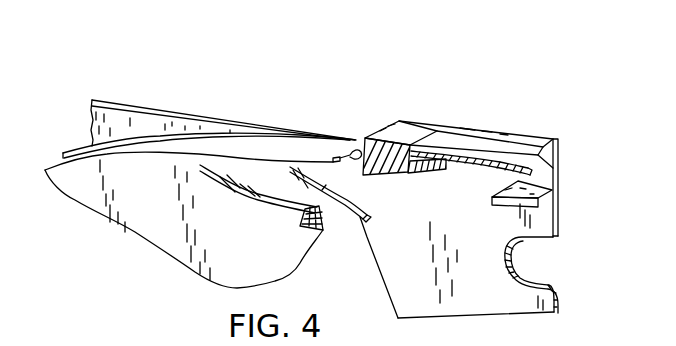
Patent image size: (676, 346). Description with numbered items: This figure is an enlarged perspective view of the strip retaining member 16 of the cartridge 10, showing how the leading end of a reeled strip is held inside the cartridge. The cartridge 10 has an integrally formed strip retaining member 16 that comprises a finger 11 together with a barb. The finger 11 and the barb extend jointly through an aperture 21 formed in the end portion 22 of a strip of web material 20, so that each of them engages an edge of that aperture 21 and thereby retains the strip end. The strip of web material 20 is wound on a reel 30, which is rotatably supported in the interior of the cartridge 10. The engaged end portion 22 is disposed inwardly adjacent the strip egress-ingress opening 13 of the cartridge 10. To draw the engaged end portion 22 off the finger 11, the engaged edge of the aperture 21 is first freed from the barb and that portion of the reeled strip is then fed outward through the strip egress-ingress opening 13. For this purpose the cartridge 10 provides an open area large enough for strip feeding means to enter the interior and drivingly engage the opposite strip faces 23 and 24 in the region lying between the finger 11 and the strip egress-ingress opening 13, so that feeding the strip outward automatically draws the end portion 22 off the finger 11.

The cartridge 10 is at (119, 93).
The finger 11 is at (444, 178).
The strip egress-ingress opening 13 is at (548, 177).
The strip retaining member 16 is at (407, 121).
The strip of web material 20 is at (333, 219).
The aperture 21 is at (353, 153).
The end portion 22 is at (492, 153).
The strip face 23 is at (460, 156).
The strip face 24 is at (500, 165).
The reel 30 is at (180, 245).